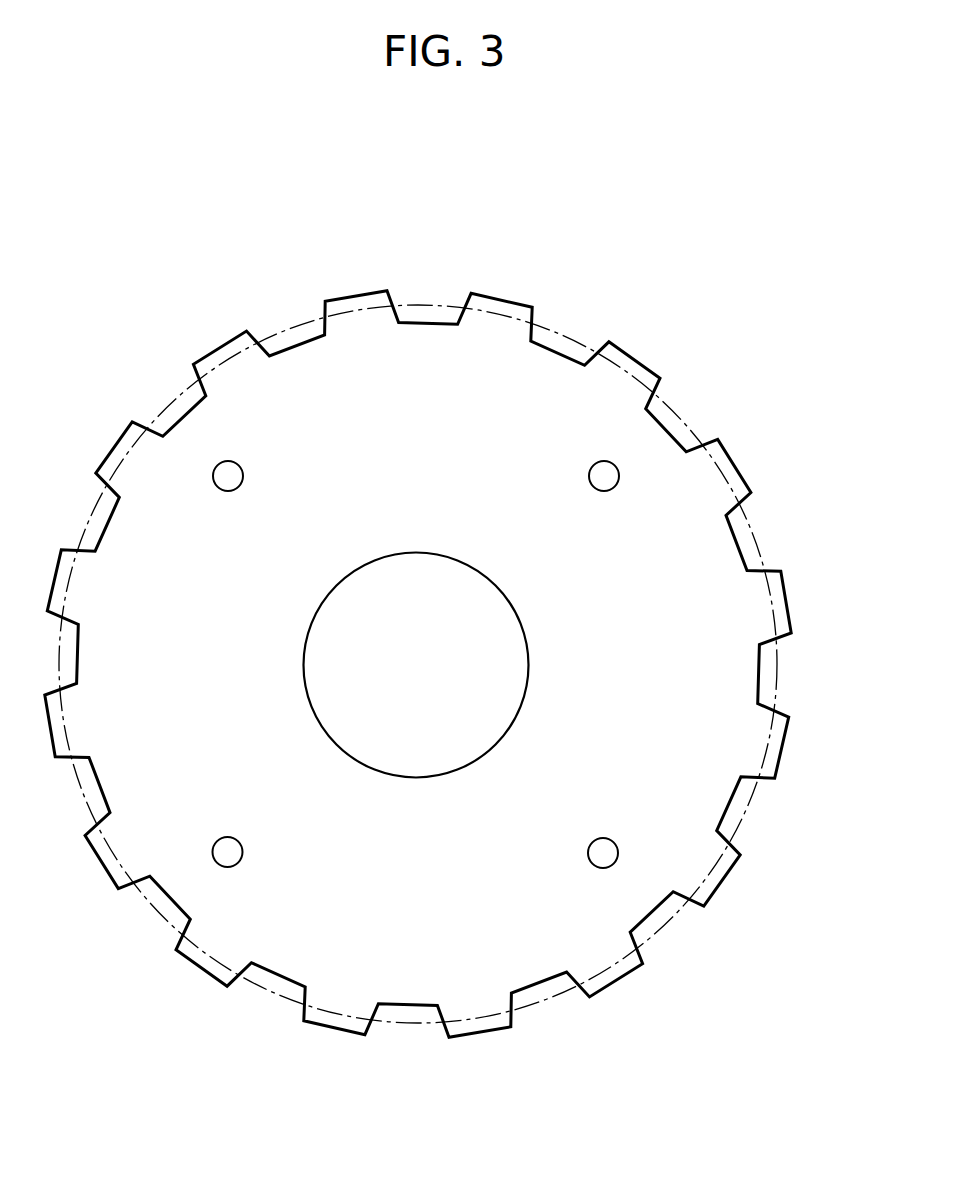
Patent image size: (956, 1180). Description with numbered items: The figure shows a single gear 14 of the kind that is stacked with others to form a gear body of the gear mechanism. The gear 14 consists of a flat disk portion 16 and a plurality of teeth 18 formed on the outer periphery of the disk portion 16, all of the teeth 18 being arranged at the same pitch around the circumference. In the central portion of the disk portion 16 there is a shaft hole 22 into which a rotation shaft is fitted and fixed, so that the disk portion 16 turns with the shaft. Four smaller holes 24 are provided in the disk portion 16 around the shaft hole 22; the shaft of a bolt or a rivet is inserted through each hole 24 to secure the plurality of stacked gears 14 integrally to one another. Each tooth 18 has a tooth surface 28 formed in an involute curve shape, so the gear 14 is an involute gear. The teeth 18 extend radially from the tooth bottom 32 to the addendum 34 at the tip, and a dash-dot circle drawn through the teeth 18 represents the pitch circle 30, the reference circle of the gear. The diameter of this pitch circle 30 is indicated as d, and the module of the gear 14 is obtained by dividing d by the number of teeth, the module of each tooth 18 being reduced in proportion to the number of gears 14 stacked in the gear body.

The gear 14 is at (346, 288).
The disk portion 16 is at (540, 383).
The tooth 18 is at (713, 478).
The shaft hole 22 is at (528, 663).
The hole 24 is at (230, 491).
The tooth surface 28 is at (197, 385).
The pitch circle 30 is at (406, 306).
The tooth bottom 32 is at (752, 540).
The addendum 34 is at (503, 293).
The pitch circle diameter d is at (546, 1000).